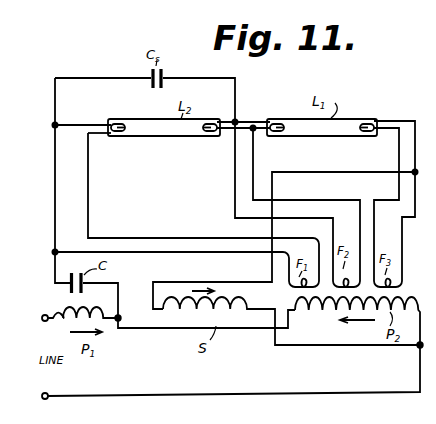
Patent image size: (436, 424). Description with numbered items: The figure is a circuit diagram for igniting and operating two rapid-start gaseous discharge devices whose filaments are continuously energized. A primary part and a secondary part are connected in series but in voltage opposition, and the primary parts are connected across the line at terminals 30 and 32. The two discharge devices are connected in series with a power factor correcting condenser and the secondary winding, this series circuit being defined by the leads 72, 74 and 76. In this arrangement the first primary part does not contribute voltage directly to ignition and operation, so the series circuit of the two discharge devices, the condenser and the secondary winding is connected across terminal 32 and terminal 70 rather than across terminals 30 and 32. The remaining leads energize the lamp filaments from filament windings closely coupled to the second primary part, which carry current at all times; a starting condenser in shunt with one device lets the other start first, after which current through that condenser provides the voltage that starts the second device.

The terminal 30 is at (57, 313).
The terminal 32 is at (418, 348).
The terminal 70 is at (121, 318).
The lead 72 is at (381, 172).
The lead 74 is at (250, 121).
The lead 76 is at (55, 231).